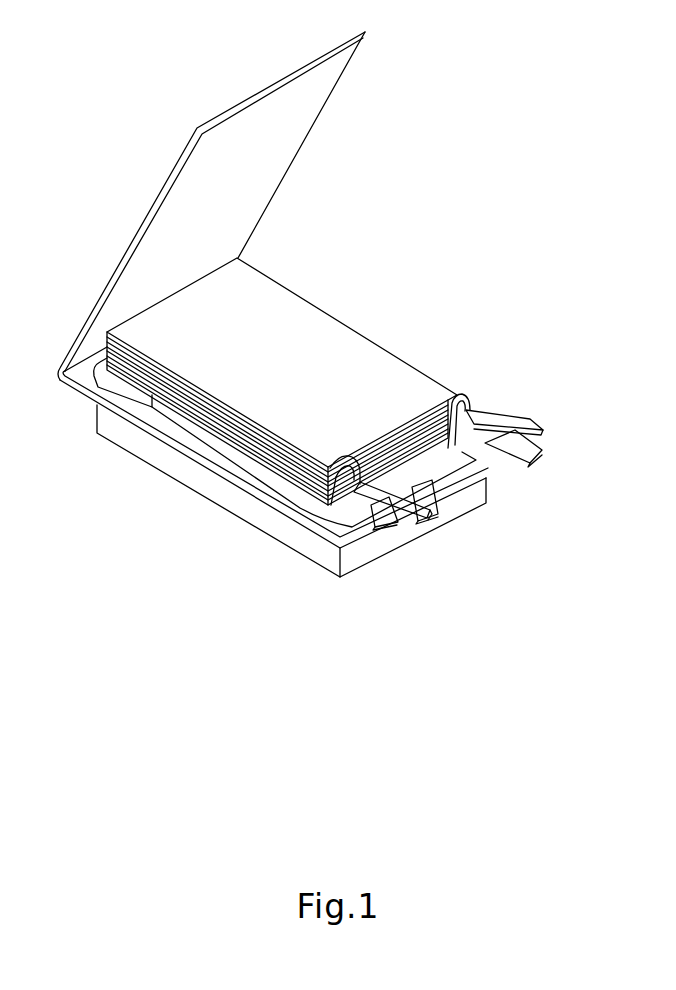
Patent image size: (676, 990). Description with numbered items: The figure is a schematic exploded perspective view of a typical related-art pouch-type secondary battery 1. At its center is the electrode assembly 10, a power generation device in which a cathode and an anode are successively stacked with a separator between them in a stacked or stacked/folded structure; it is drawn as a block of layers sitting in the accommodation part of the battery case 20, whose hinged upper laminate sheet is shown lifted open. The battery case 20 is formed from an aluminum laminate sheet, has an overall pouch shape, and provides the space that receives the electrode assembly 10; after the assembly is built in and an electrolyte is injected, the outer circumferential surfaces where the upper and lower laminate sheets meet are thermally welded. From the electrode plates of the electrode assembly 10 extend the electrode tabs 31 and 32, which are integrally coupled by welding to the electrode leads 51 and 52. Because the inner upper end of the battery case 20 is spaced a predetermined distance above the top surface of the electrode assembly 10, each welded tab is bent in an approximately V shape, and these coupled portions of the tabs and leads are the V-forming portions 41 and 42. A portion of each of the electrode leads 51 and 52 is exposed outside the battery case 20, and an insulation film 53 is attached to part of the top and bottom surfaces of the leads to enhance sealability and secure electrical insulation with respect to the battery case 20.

The pouch-type secondary battery 1 is at (152, 108).
The electrode assembly 10 is at (337, 347).
The battery case 20 is at (80, 395).
The electrode tab 31 is at (327, 495).
The electrode tab 32 is at (458, 393).
The V-forming portion 41 is at (367, 490).
The V-forming portion 42 is at (467, 416).
The electrode lead 51 is at (434, 520).
The electrode lead 52 is at (540, 452).
The insulation film 53 is at (372, 533).